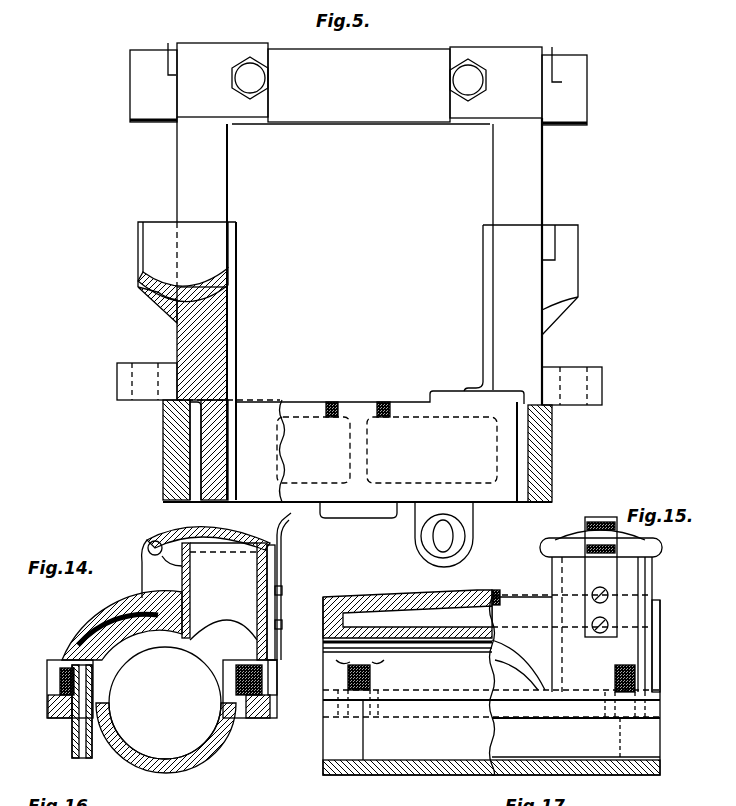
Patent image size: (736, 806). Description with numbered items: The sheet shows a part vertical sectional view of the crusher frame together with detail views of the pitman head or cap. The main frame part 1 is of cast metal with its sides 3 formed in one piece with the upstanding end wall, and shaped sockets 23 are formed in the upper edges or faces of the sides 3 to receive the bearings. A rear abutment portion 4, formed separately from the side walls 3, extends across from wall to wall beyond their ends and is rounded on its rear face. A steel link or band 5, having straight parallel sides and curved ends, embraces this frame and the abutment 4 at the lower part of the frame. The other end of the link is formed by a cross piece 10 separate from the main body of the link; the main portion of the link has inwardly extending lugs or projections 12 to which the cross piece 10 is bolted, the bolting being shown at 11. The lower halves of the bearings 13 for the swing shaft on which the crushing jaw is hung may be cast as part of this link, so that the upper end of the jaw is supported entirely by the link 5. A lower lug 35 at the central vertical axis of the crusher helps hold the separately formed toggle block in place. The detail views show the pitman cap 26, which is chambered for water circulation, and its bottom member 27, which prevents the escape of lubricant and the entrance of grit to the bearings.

In FIG. 5, the main frame part 1 is at (359, 342).
In FIG. 5, the sides 3 is at (212, 344).
In FIG. 5, the rear abutment portion 4 is at (310, 404).
In FIG. 5, the steel link or band 5 is at (180, 462).
In FIG. 5, the cross piece 10 is at (361, 86).
In FIG. 5, the bolts 11 is at (256, 86).
In FIG. 5, the lugs or projections 12 is at (201, 60).
In FIG. 5, the lower halves of the bearings 13 is at (137, 88).
In FIG. 5, the shaped sockets 23 is at (160, 306).
In FIG. 14, the cap 26 is at (106, 618).
In FIG. 15, the cap 26 is at (405, 596).
In FIG. 14, the bottom member 27 is at (224, 738).
In FIG. 15, the bottom member 27 is at (437, 764).
In FIG. 5, the lower lug 35 is at (355, 515).